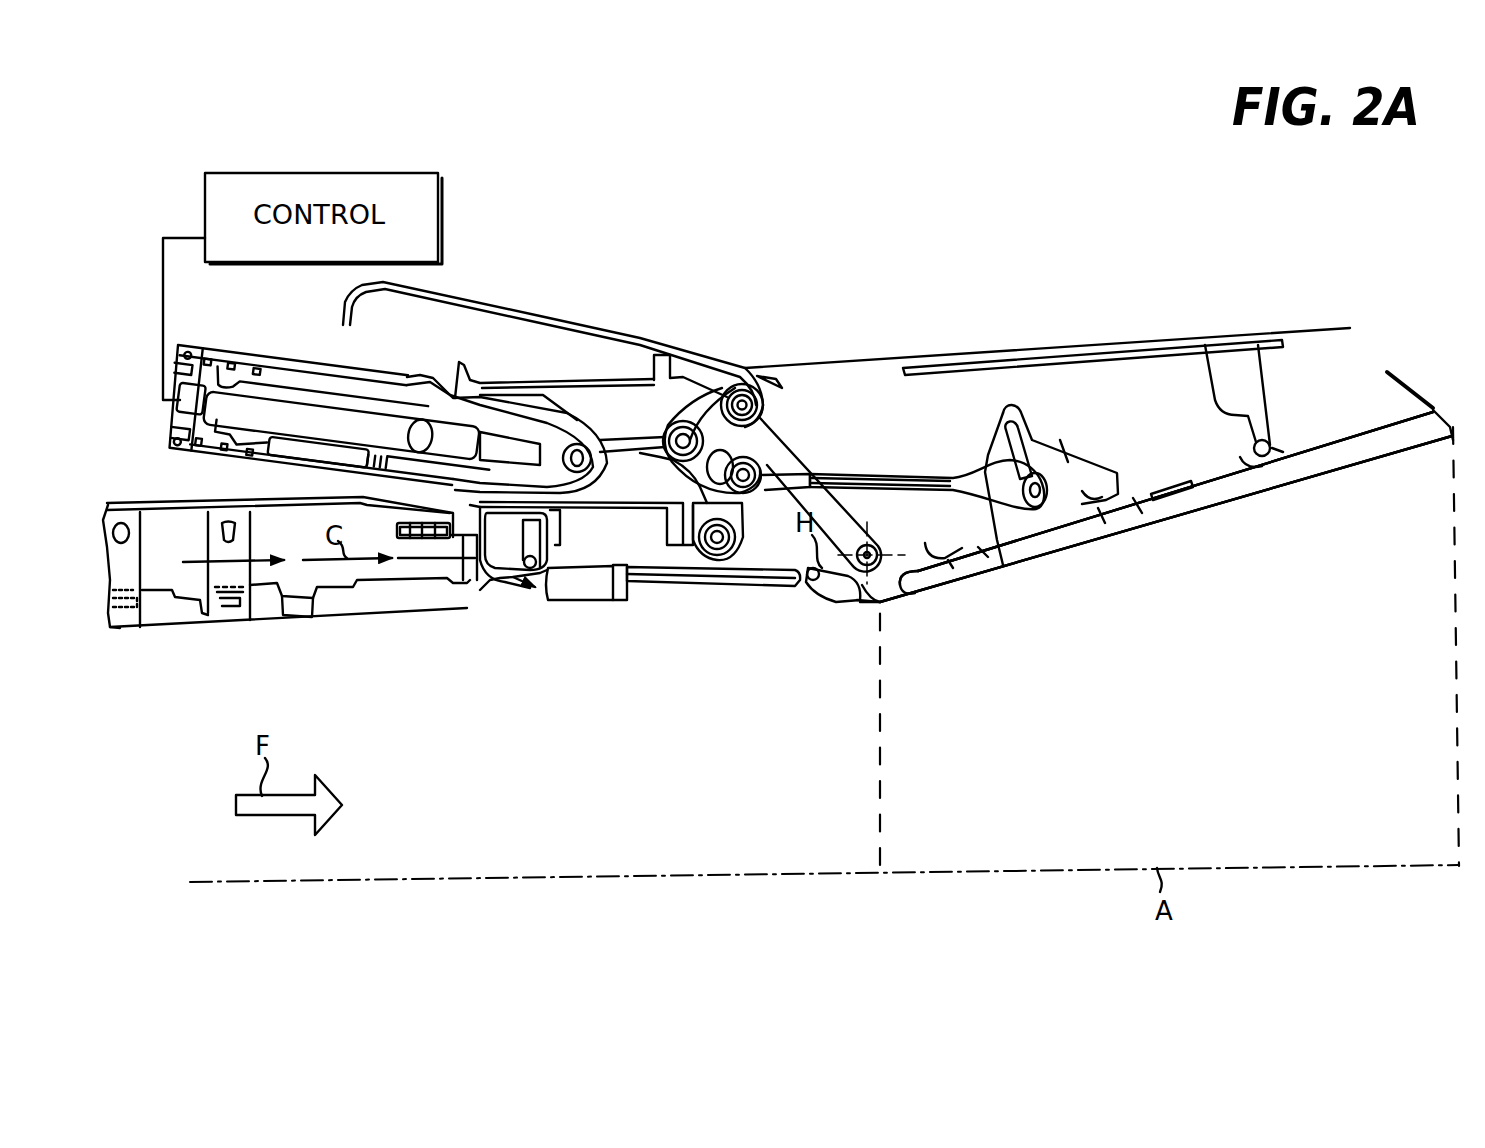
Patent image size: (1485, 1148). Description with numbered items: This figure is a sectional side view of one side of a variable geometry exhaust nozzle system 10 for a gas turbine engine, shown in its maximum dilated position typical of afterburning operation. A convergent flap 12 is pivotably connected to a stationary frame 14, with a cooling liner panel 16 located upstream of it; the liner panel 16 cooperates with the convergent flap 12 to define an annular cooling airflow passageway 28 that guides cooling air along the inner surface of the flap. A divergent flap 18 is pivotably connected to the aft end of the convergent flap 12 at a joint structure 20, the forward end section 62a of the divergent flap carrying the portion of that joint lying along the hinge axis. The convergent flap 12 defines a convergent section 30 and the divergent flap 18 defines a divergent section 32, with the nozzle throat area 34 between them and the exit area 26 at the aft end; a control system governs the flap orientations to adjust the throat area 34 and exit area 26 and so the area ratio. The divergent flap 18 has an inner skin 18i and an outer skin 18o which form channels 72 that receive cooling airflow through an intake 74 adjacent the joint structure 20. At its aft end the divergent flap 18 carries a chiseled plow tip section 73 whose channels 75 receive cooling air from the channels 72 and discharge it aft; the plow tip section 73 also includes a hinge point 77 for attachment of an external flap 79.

The nozzle system 10 is at (1046, 224).
The convergent flap 12 is at (705, 586).
The stationary frame 14 is at (575, 513).
The cooling liner panel 16 is at (463, 610).
The divergent flap 18 is at (1120, 540).
The outer skin 18o is at (1211, 481).
The inner skin 18i is at (1213, 507).
The joint structure 20 is at (882, 553).
The exit area 26 is at (1457, 649).
The annular cooling airflow passageway 28 is at (290, 562).
The convergent section 30 is at (366, 682).
The divergent section 32 is at (1166, 578).
The nozzle throat area 34 is at (880, 780).
The flap leading edge 62a is at (894, 606).
The channels 72 is at (1022, 550).
The plow tip section 73 is at (1327, 479).
The intake 74 is at (822, 600).
The channels 75 is at (1449, 415).
The hinge point 77 is at (1272, 448).
The external flap 79 is at (1168, 346).